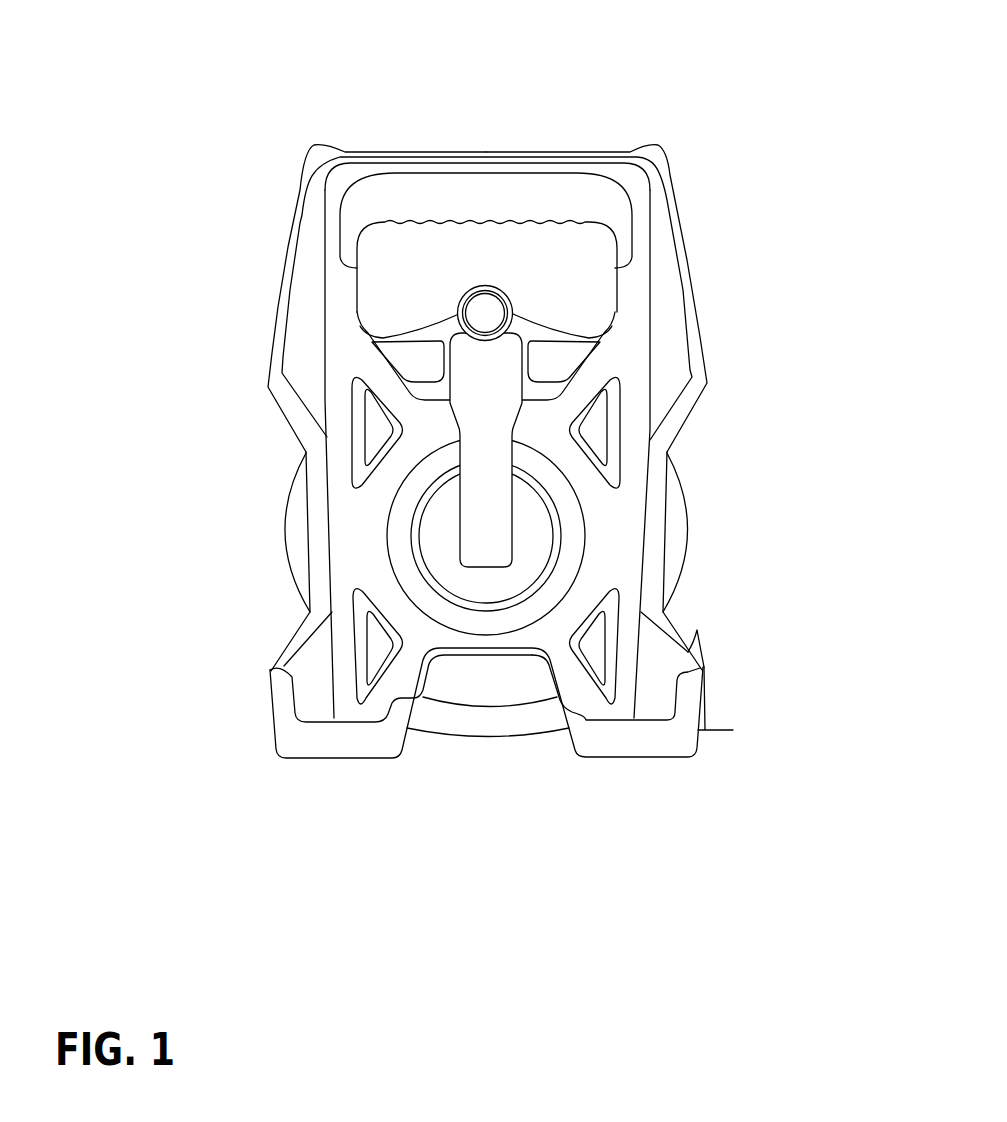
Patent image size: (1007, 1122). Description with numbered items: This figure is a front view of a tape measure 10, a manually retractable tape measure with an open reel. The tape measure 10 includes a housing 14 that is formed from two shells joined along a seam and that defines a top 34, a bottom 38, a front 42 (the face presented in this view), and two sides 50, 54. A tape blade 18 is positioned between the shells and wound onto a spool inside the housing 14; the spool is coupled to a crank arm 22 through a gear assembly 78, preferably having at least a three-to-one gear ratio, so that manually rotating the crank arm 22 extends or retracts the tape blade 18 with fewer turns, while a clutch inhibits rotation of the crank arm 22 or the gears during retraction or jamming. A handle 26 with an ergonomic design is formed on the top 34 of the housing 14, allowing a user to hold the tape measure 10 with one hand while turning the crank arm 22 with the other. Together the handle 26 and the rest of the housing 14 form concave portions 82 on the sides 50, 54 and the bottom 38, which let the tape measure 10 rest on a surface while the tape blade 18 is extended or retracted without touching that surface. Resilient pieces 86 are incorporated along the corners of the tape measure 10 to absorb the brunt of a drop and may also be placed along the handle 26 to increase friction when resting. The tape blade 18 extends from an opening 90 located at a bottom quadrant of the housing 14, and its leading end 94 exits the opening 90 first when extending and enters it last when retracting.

The tape measure 10 is at (635, 95).
The housing 14 is at (383, 520).
The tape blade 18 is at (305, 575).
The crank arm 22 is at (489, 322).
The handle 26 is at (400, 162).
The top 34 is at (357, 150).
The bottom 38 is at (627, 757).
The front 42 is at (337, 407).
The side 50 is at (705, 403).
The side 54 is at (282, 307).
The gear assembly 78 is at (540, 514).
The concave portions 82 is at (258, 487).
The resilient pieces 86 is at (430, 207).
The opening 90 is at (700, 743).
The leading end 94 is at (714, 722).